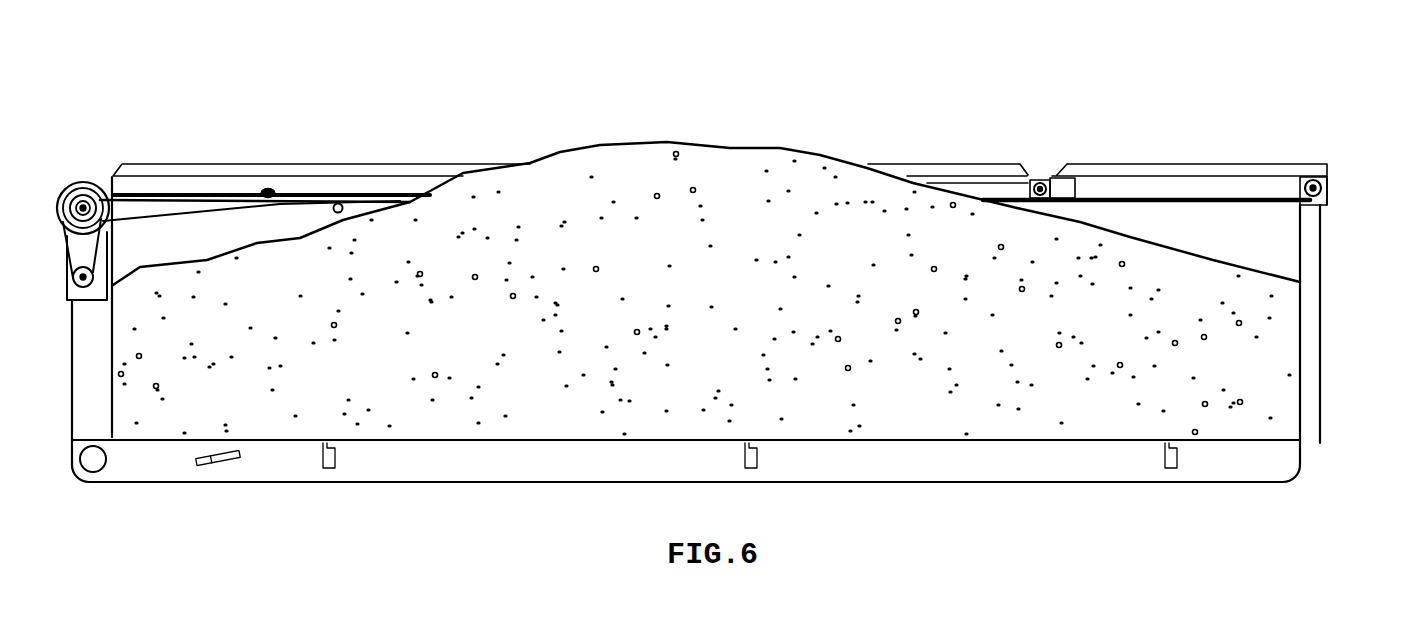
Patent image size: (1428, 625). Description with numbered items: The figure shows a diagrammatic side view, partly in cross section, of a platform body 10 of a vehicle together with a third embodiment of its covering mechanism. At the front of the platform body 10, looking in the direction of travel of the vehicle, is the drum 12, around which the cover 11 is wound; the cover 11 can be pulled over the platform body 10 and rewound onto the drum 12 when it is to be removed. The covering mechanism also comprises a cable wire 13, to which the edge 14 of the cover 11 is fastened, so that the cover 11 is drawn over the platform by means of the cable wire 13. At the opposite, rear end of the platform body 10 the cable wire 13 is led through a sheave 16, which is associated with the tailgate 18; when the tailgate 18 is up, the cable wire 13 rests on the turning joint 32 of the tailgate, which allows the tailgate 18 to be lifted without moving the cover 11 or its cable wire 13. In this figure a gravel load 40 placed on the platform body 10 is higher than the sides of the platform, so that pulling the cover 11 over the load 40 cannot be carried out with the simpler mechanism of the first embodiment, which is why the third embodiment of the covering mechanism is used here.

The platform body 10 is at (1107, 509).
The cover 11 is at (187, 200).
The drum 12 is at (82, 197).
The cable wire 13 is at (328, 193).
The edge of the cover 14 is at (268, 189).
The sheave 16 is at (1305, 180).
The tailgate 18 is at (1313, 262).
The turning joint 32 is at (1040, 180).
The gravel load 40 is at (742, 165).